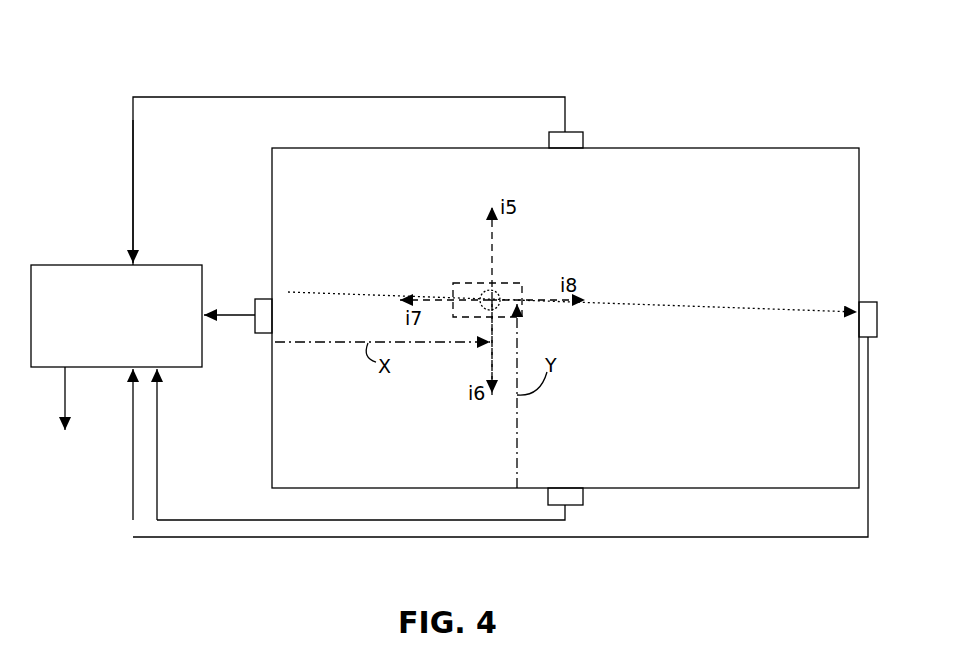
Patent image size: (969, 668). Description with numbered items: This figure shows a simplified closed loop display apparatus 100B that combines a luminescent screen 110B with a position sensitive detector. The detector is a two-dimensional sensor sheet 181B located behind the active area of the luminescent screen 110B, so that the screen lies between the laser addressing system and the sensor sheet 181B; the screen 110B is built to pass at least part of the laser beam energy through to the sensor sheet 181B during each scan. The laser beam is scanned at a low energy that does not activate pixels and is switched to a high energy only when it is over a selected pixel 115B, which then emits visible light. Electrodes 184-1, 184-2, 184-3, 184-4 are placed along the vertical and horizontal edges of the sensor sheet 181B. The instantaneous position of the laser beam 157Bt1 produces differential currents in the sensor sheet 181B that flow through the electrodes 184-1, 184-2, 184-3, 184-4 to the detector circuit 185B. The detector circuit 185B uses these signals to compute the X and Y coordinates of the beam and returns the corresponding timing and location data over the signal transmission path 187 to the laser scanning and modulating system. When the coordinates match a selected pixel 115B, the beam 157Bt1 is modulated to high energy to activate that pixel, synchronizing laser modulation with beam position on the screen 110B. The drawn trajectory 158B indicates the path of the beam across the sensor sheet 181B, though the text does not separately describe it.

The closed loop display apparatus 100B is at (181, 60).
The detector circuit 185B is at (86, 260).
The signal transmission path 187 is at (66, 415).
The luminescent screen 110B is at (565, 318).
The sensor sheet 181B is at (760, 207).
The electrode 184-1 is at (549, 140).
The electrode 184-2 is at (583, 497).
The electrode 184-3 is at (868, 302).
The electrode 184-4 is at (264, 335).
The laser beam 157Bt1 is at (487, 287).
The pixel 115B is at (522, 283).
The object trajectory 158B is at (665, 302).